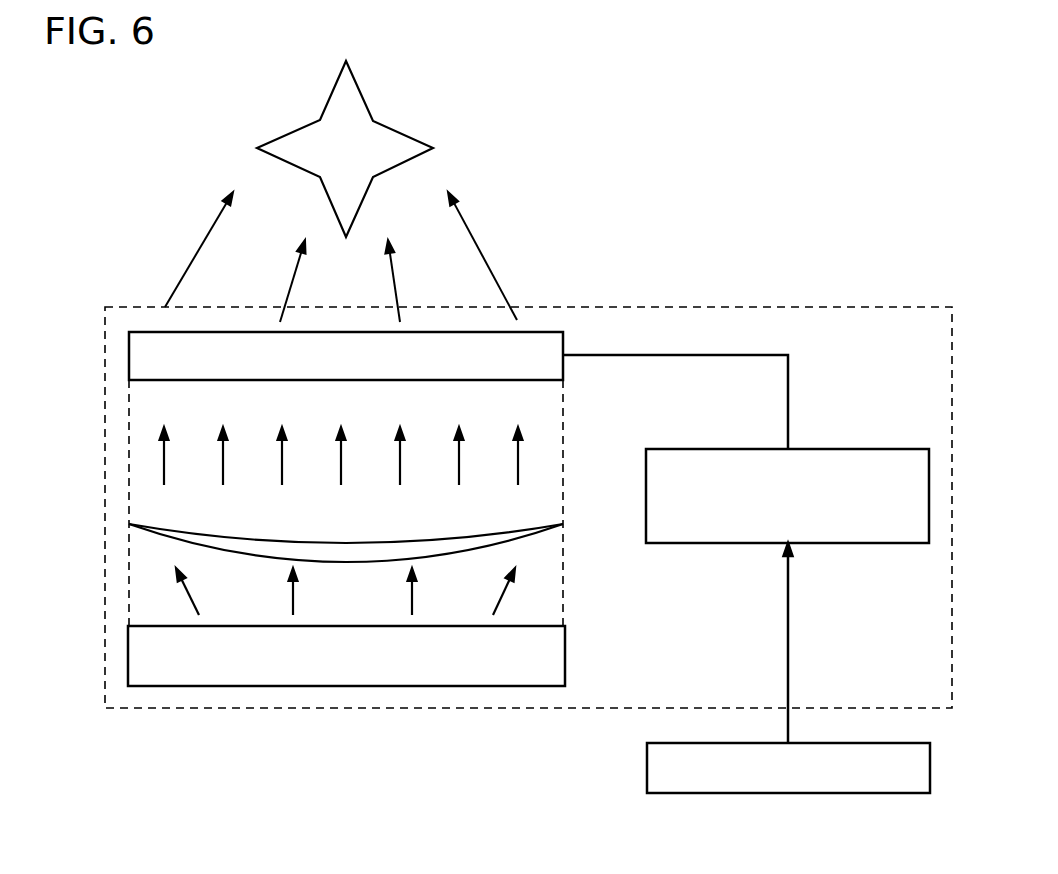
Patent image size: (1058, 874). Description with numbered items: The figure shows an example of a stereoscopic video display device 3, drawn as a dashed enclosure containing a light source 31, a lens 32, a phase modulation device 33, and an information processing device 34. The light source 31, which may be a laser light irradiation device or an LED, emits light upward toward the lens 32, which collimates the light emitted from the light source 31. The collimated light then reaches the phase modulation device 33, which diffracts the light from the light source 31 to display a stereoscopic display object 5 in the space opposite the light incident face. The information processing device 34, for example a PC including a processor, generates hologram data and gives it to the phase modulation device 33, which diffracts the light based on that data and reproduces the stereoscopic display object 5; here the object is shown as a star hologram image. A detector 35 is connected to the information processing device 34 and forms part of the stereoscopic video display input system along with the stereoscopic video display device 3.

The stereoscopic video display device 3 is at (863, 297).
The stereoscopic display object 5 is at (304, 145).
The light source 31 is at (140, 657).
The lens 32 is at (130, 526).
The phase modulation device 33 is at (140, 356).
The information processing device 34 is at (787, 496).
The detector 35 is at (788, 768).